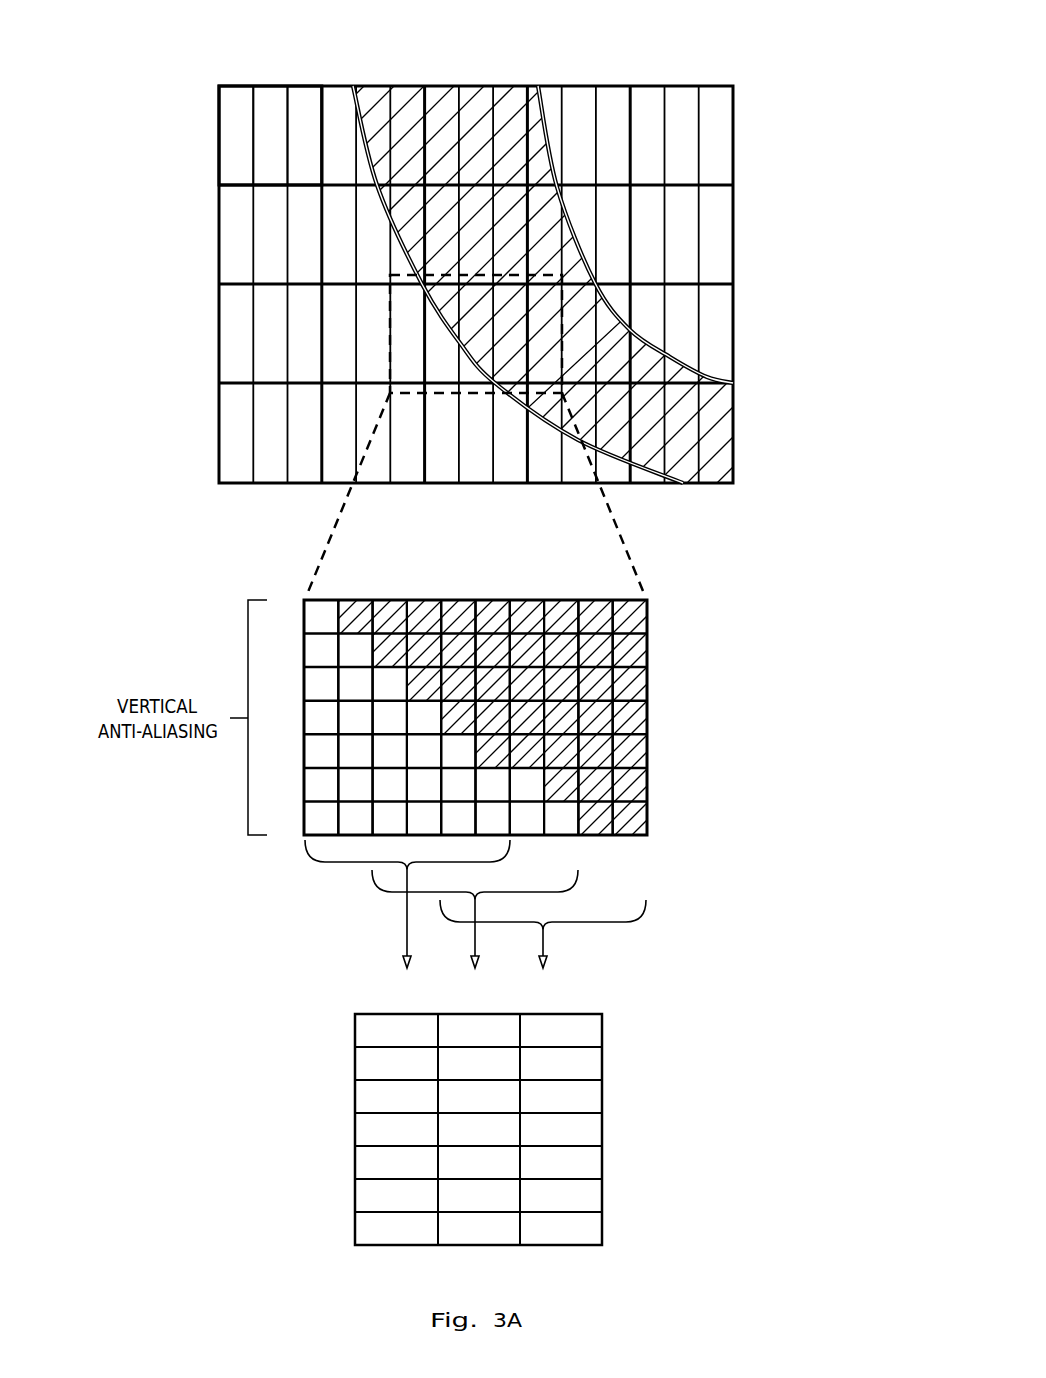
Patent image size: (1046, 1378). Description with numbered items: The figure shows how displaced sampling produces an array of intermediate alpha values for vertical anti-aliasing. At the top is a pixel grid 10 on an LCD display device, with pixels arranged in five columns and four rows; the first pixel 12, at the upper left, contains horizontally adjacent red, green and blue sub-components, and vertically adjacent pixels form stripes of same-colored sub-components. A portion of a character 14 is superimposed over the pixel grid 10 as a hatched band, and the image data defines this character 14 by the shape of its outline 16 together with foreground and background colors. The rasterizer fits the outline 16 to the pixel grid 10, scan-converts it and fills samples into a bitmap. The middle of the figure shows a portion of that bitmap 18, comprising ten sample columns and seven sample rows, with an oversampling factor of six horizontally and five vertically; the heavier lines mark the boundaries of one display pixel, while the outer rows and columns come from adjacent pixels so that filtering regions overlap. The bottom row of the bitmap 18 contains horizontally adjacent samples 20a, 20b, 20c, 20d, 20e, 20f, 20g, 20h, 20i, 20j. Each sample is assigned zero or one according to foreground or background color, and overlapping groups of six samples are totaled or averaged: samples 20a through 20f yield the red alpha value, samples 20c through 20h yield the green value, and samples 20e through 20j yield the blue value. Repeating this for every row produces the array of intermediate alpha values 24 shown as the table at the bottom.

The pixel grid 10 is at (193, 222).
The first pixel 12 is at (219, 118).
The character 14 is at (560, 202).
The outline 16 is at (597, 283).
The bitmap 18 is at (709, 692).
The sample 20a is at (320, 818).
The sample 20b is at (352, 828).
The sample 20c is at (387, 828).
The sample 20d is at (420, 830).
The sample 20e is at (493, 828).
The sample 20f is at (460, 828).
The sample 20g is at (528, 828).
The sample 20h is at (563, 828).
The sample 20i is at (615, 835).
The sample 20j is at (648, 840).
The array of intermediate alpha values 24 is at (640, 1115).